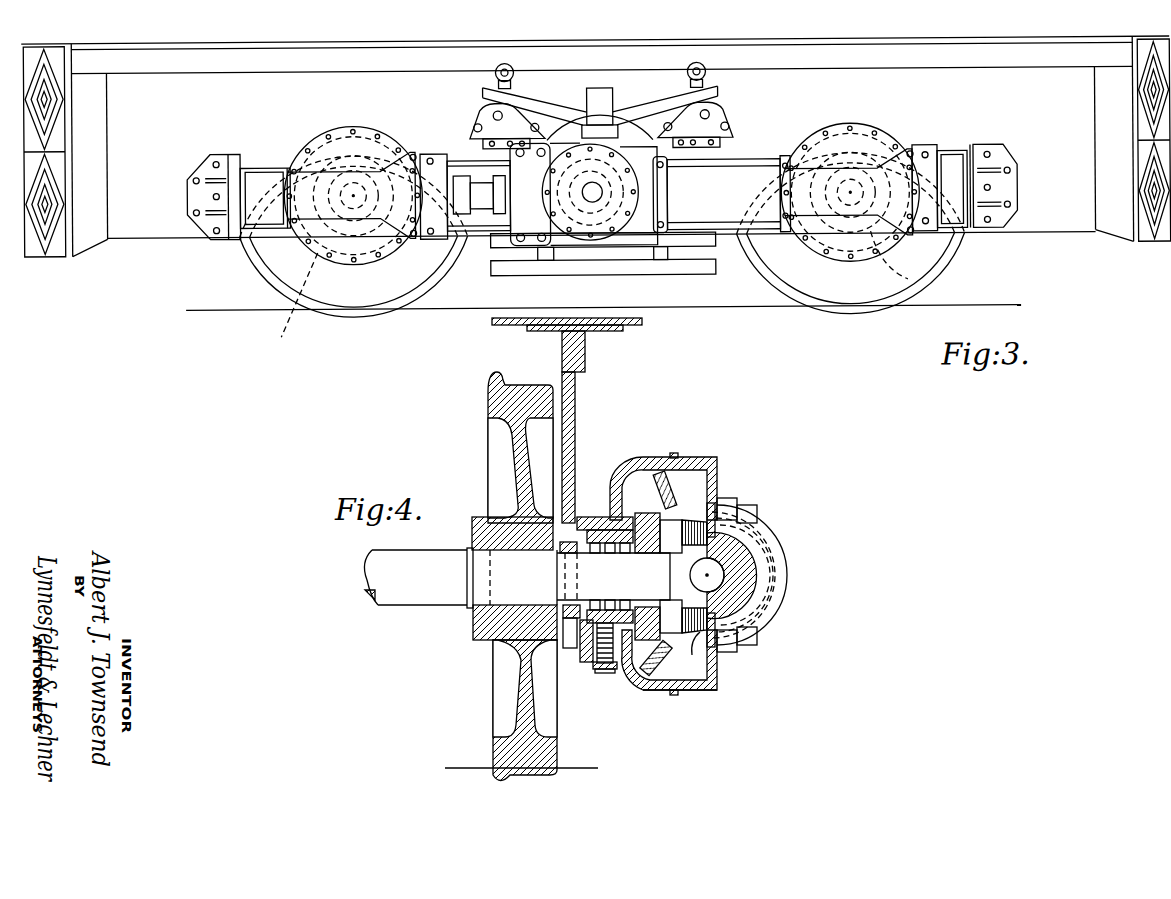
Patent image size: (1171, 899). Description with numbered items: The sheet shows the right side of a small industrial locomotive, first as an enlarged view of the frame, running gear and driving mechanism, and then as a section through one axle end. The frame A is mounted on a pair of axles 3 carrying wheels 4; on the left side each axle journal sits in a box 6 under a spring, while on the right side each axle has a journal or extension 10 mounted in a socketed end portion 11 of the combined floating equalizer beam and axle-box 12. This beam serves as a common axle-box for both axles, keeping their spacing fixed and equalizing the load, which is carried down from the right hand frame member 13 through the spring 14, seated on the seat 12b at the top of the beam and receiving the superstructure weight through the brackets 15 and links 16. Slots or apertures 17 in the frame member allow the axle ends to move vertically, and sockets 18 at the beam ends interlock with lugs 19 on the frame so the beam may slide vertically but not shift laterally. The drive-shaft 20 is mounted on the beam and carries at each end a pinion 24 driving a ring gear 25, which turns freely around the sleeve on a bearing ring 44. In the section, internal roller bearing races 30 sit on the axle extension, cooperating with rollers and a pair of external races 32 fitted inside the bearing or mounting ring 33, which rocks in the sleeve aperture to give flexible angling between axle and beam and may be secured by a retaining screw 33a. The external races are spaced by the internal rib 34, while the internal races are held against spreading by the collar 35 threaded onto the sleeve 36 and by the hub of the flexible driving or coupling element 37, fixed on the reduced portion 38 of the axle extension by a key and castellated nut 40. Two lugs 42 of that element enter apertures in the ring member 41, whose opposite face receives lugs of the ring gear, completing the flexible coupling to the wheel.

In FIG. 3, the frame A is at (596, 174).
In FIG. 4, the axle 3 is at (427, 578).
In FIG. 3, the wheel 4 is at (368, 20).
In FIG. 3, the box 6 is at (582, 16).
In FIG. 4, the journal or extension 10 is at (613, 577).
In FIG. 4, the socketed end portion 11 is at (584, 516).
In FIG. 3, the combined floating equalizer beam and axle-box 12 is at (480, 237).
In FIG. 4, the combined floating equalizer beam and axle-box 12 is at (612, 482).
In FIG. 3, the seat 12b is at (611, 132).
In FIG. 3, the right hand frame member 13 is at (602, 164).
In FIG. 4, the right hand frame member 13 is at (576, 408).
In FIG. 3, the spring 14 is at (600, 112).
In FIG. 3, the brackets 15 is at (490, 118).
In FIG. 3, the links 16 is at (494, 80).
In FIG. 3, the slots or apertures 17 is at (933, 290).
In FIG. 4, the slots or apertures 17 is at (557, 620).
In FIG. 3, the sockets 18 is at (258, 208).
In FIG. 3, the lugs 19 is at (235, 236).
In FIG. 3, the drive-shaft 20 is at (712, 200).
In FIG. 4, the drive-shaft 20 is at (712, 575).
In FIG. 4, the pinion 24 is at (721, 654).
In FIG. 4, the ring gear 25 is at (700, 690).
In FIG. 4, the internal roller bearing race 30 is at (630, 551).
In FIG. 4, the external race 32 is at (612, 670).
In FIG. 4, the bearing or mounting ring 33 is at (591, 640).
In FIG. 4, the retaining screw 33a is at (598, 674).
In FIG. 4, the internal rib 34 is at (607, 607).
In FIG. 4, the collar 35 is at (572, 612).
In FIG. 4, the sleeve 36 is at (540, 618).
In FIG. 4, the flexible driving or coupling element 37 is at (704, 634).
In FIG. 4, the reduced portion 38 is at (658, 576).
In FIG. 4, the castellated nut 40 is at (710, 534).
In FIG. 4, the ring member 41 is at (684, 555).
In FIG. 4, the lugs 42 is at (677, 512).
In FIG. 4, the bearing ring 44 is at (652, 690).